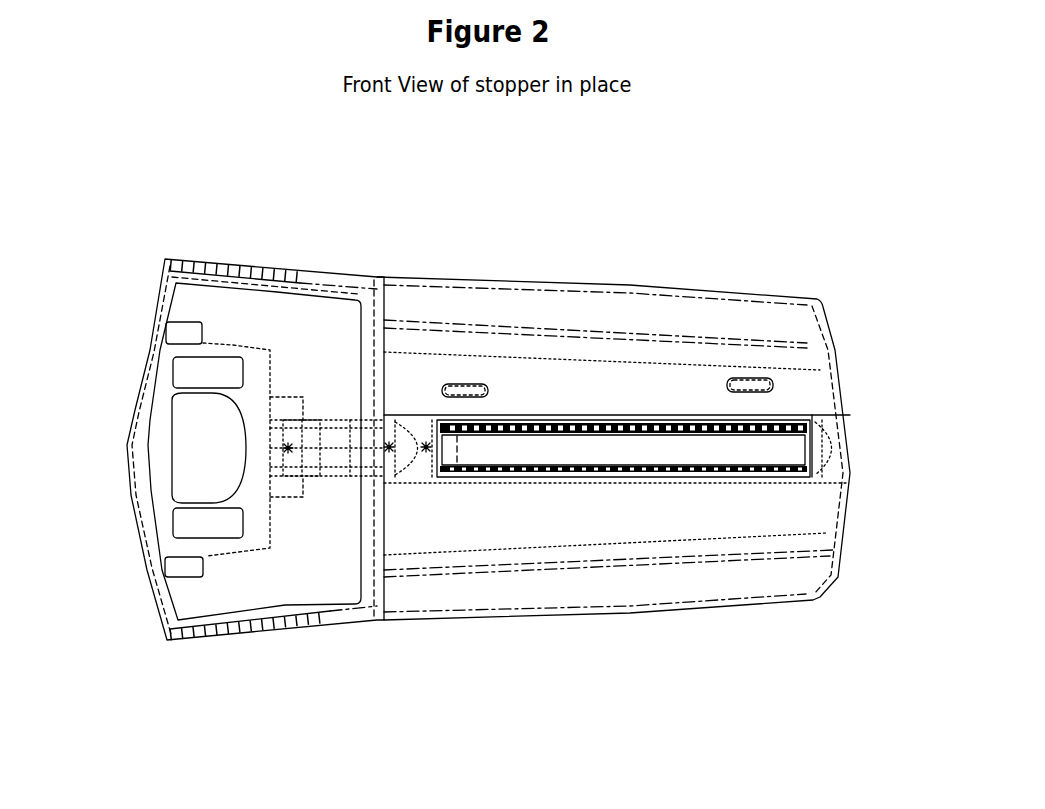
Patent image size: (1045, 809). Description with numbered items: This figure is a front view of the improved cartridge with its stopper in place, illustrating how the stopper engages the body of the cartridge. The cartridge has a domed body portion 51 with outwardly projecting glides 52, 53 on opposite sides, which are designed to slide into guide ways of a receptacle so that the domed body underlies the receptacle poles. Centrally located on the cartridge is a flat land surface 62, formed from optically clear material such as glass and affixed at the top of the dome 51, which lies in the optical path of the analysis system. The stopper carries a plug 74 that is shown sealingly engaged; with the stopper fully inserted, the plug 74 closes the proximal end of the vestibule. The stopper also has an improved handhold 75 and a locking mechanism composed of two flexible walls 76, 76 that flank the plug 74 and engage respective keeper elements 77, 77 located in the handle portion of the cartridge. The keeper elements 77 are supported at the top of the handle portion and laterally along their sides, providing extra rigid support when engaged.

The domed body portion 51 is at (660, 358).
The glide 52 is at (592, 622).
The glide 53 is at (578, 277).
The flat land surface 62 is at (775, 440).
The plug 74 is at (268, 458).
The handhold 75 is at (153, 442).
The flexible wall 76 is at (233, 345).
The keeper element 77 is at (190, 326).